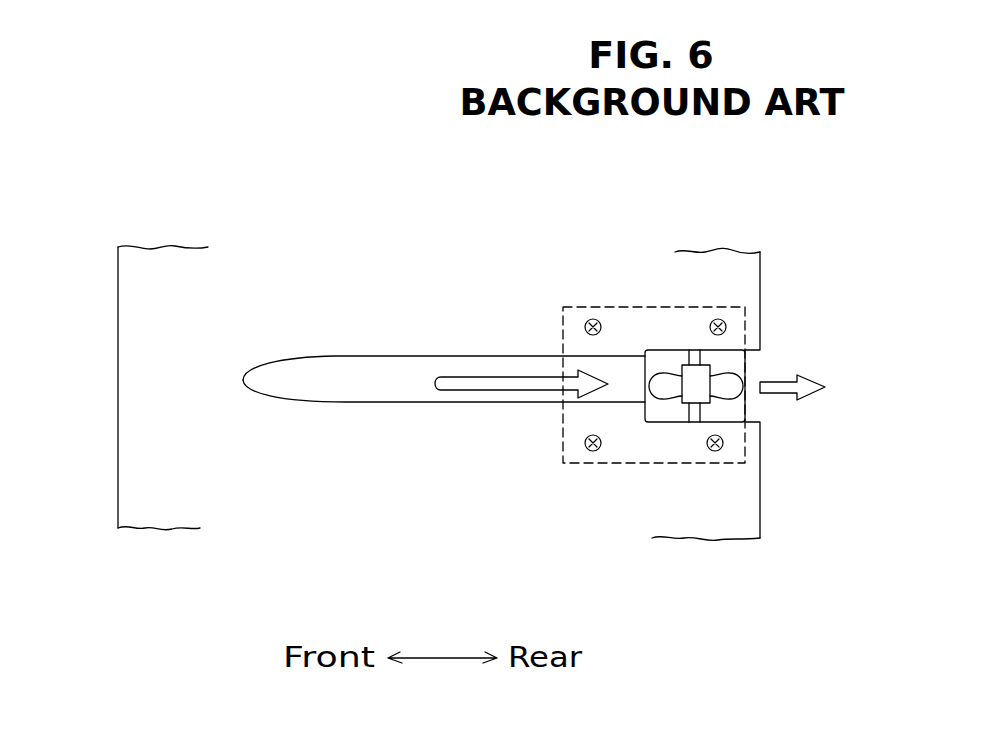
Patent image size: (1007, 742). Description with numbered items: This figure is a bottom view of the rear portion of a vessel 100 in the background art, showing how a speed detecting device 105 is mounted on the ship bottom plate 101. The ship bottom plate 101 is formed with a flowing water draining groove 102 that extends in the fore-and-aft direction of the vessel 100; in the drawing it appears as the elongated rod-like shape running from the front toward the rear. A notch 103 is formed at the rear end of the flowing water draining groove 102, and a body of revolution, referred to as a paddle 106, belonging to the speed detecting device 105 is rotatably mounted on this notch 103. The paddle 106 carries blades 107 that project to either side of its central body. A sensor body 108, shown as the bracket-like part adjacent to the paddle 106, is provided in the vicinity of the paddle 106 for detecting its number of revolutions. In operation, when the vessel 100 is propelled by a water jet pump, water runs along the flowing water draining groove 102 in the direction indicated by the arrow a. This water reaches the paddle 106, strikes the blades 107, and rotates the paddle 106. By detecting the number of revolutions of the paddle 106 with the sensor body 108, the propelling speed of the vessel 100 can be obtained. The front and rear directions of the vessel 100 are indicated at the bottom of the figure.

The vessel 100 is at (250, 258).
The ship bottom plate 101 is at (230, 440).
The flowing water draining groove 102 is at (352, 402).
The notch 103 is at (675, 410).
The speed detecting device 105 is at (605, 305).
The paddle 106 is at (735, 364).
The blades 107 is at (730, 390).
The sensor body 108 is at (670, 312).
The arrow a is at (497, 378).